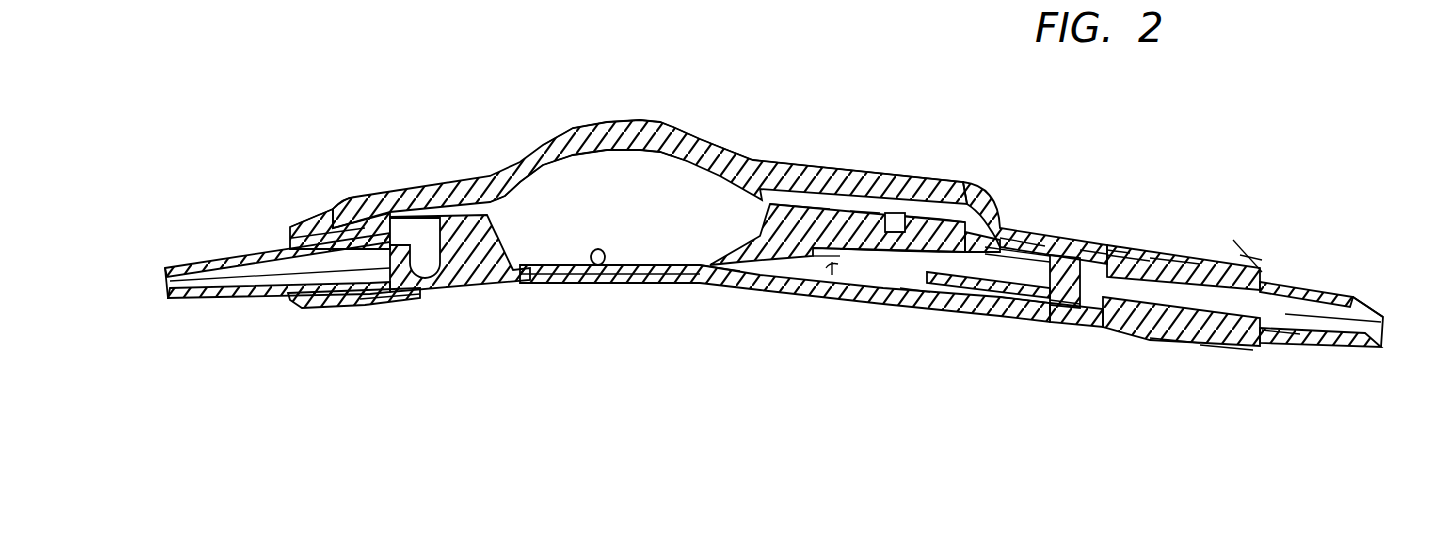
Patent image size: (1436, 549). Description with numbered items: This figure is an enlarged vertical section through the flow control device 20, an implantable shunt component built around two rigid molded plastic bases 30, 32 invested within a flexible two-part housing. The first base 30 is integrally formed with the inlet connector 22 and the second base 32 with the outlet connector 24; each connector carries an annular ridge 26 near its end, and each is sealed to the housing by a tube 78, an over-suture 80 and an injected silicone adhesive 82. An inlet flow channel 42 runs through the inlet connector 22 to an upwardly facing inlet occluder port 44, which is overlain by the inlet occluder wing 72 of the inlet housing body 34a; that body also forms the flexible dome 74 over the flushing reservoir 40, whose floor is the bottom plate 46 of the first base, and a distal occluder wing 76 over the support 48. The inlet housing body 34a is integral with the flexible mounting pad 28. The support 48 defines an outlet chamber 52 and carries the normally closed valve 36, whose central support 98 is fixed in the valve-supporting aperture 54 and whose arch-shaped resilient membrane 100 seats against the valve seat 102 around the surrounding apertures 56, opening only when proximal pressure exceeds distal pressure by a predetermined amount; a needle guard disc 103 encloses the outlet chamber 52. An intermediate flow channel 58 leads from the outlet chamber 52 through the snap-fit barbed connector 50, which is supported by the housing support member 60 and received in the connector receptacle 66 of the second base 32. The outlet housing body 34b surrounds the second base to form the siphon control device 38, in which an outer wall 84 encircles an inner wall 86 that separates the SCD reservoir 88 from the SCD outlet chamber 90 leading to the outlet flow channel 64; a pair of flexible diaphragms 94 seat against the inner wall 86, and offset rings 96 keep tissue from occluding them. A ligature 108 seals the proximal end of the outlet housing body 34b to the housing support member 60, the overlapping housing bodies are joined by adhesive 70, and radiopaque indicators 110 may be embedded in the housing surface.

The flow control device 20 is at (723, 122).
The inlet connector 22 is at (247, 299).
The outlet connector 24 is at (1313, 290).
The annular ridge 26 is at (225, 255).
The mounting pad 28 is at (420, 305).
The first base 30 is at (538, 285).
The second base 32 is at (1287, 344).
The inlet housing body 34a is at (568, 124).
The outlet housing body 34b is at (1207, 240).
The normally closed valve 36 is at (797, 292).
The siphon control device 38 is at (1097, 333).
The flushing reservoir 40 is at (661, 177).
The inlet flow channel 42 is at (265, 268).
The inlet occluder port 44 is at (426, 230).
The bottom plate 46 is at (594, 266).
The support 48 is at (803, 172).
The barbed connector 50 is at (1050, 230).
The outlet chamber 52 is at (823, 292).
The valve-supporting aperture 54 is at (807, 203).
The apertures 56 is at (900, 210).
The intermediate flow channel 58 is at (960, 305).
The housing support member 60 is at (933, 297).
The outlet flow channel 64 is at (1350, 297).
The connector receptacle 66 is at (1015, 230).
The adhesive 70 is at (960, 215).
The inlet occluder wing 72 is at (385, 193).
The dome 74 is at (622, 119).
The distal occluder wing 76 is at (863, 205).
The tube 78 is at (313, 309).
The over-suture 80 is at (337, 309).
The silicone adhesive 82 is at (353, 305).
The outer wall 84 is at (1140, 252).
The inner wall 86 is at (1030, 318).
The SCD reservoir 88 is at (1127, 343).
The SCD outlet chamber 90 is at (1050, 325).
The diaphragms 94 is at (1063, 323).
The offset rings 96 is at (1160, 247).
The central support 98 is at (847, 180).
The resilient membrane 100 is at (850, 293).
The valve seat 102 is at (703, 268).
The needle guard disc 103 is at (883, 295).
The ligature 108 is at (978, 215).
The radiopaque indicators 110 is at (923, 207).